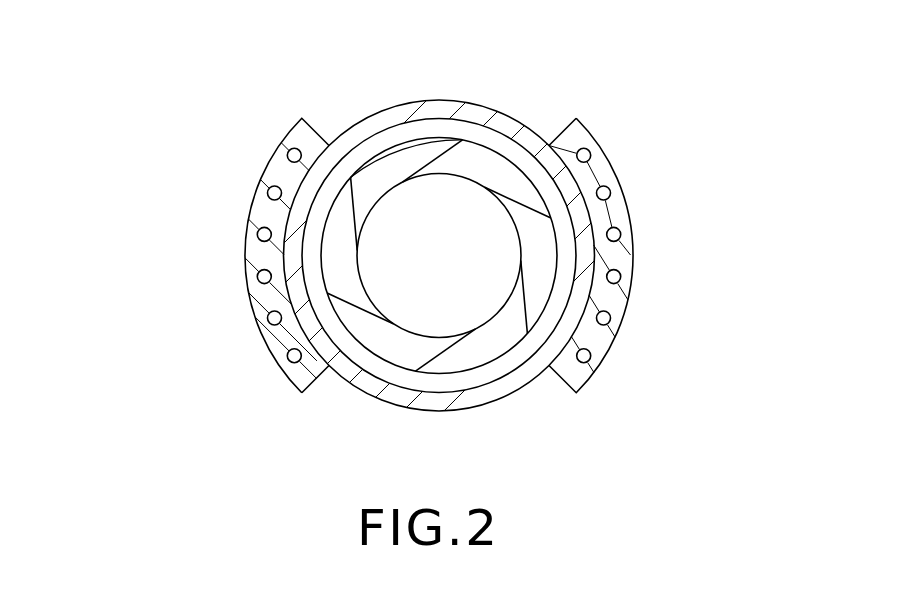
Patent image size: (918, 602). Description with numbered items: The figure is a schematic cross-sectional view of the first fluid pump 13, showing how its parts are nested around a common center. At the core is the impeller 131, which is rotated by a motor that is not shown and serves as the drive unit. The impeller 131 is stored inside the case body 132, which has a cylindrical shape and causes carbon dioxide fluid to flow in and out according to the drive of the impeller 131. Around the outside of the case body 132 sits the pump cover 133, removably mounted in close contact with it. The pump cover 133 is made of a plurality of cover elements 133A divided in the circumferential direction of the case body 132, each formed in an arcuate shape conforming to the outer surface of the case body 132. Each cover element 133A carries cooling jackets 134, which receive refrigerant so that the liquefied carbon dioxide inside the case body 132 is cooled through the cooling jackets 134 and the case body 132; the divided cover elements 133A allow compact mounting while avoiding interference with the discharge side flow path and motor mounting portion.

The first fluid pump 13 is at (614, 121).
The impeller 131 is at (478, 168).
The case body 132 is at (393, 116).
The pump cover 133 is at (436, 255).
The cover element 133A is at (245, 283).
The cooling jacket 134 is at (263, 235).